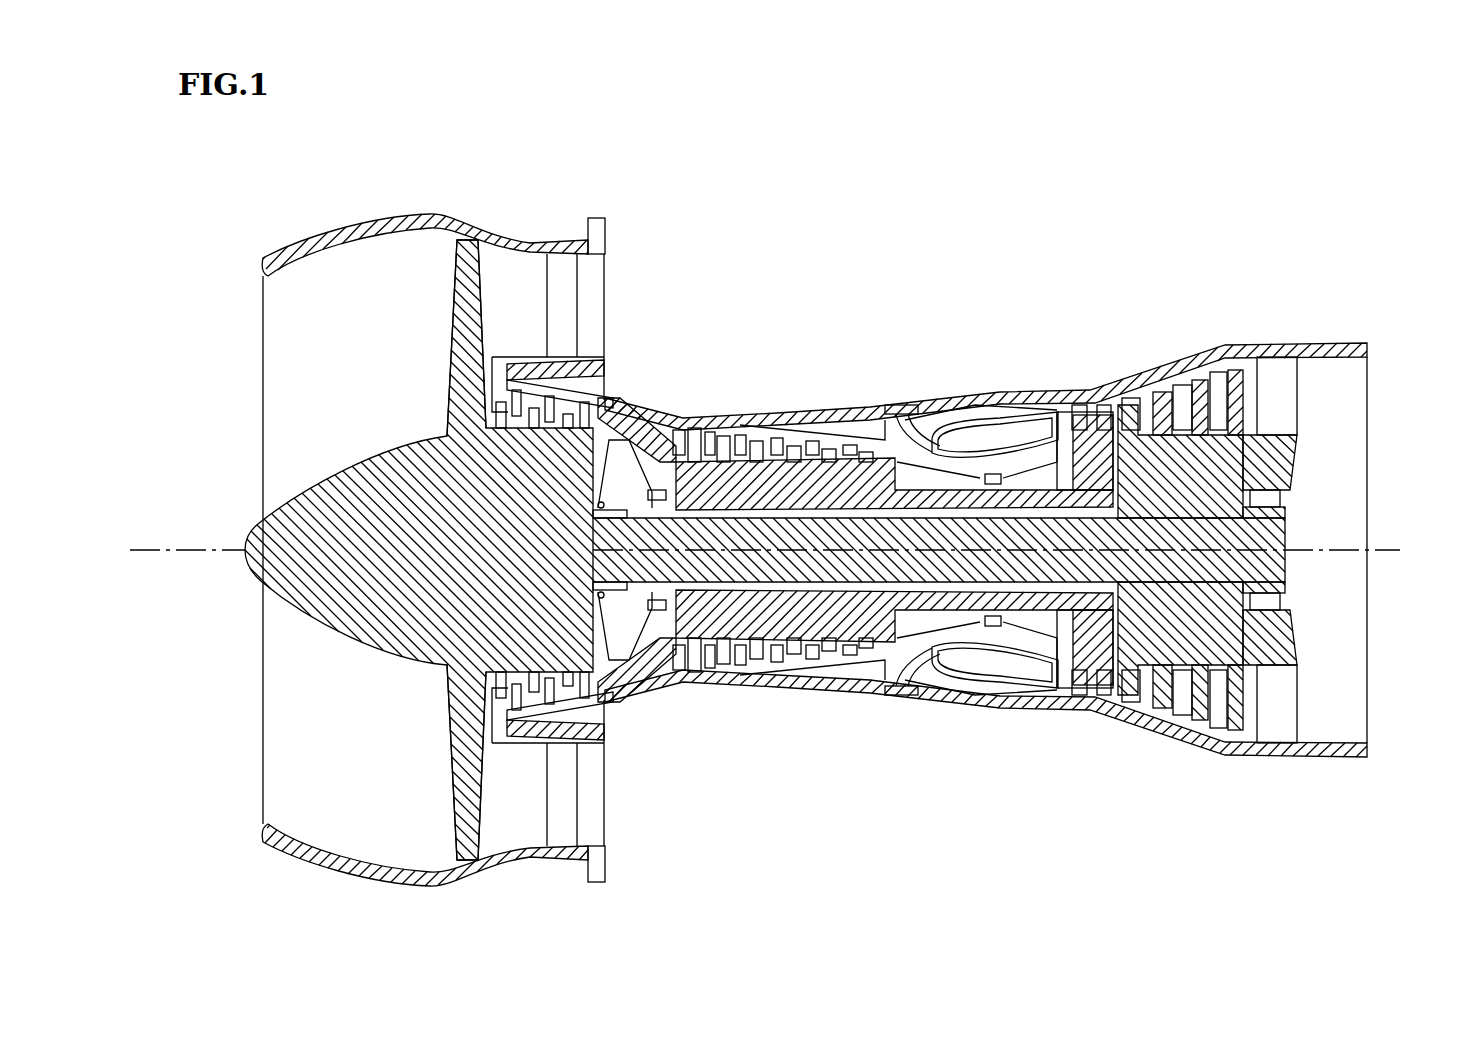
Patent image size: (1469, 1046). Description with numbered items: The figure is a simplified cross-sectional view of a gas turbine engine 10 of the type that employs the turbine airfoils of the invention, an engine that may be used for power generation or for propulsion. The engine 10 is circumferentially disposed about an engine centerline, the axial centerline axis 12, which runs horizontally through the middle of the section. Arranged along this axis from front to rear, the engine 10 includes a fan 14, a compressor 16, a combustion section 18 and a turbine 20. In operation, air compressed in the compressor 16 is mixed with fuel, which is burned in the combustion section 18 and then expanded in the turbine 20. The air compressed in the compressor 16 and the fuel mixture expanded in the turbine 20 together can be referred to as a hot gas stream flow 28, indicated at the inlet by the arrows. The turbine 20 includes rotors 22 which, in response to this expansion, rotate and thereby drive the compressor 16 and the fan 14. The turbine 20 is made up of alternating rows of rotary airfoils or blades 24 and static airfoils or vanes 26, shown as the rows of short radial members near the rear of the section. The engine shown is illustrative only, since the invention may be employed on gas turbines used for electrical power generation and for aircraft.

The gas turbine engine 10 is at (275, 227).
The axial centerline axis 12 is at (190, 548).
The fan 14 is at (452, 272).
The compressor 16 is at (898, 395).
The combustion section 18 is at (1063, 380).
The turbine 20 is at (1367, 343).
The rotors 22 is at (1118, 566).
The rotary airfoils or blades 24 is at (1222, 730).
The static airfoils or vanes 26 is at (1150, 400).
The hot gas stream flow 28 is at (280, 392).